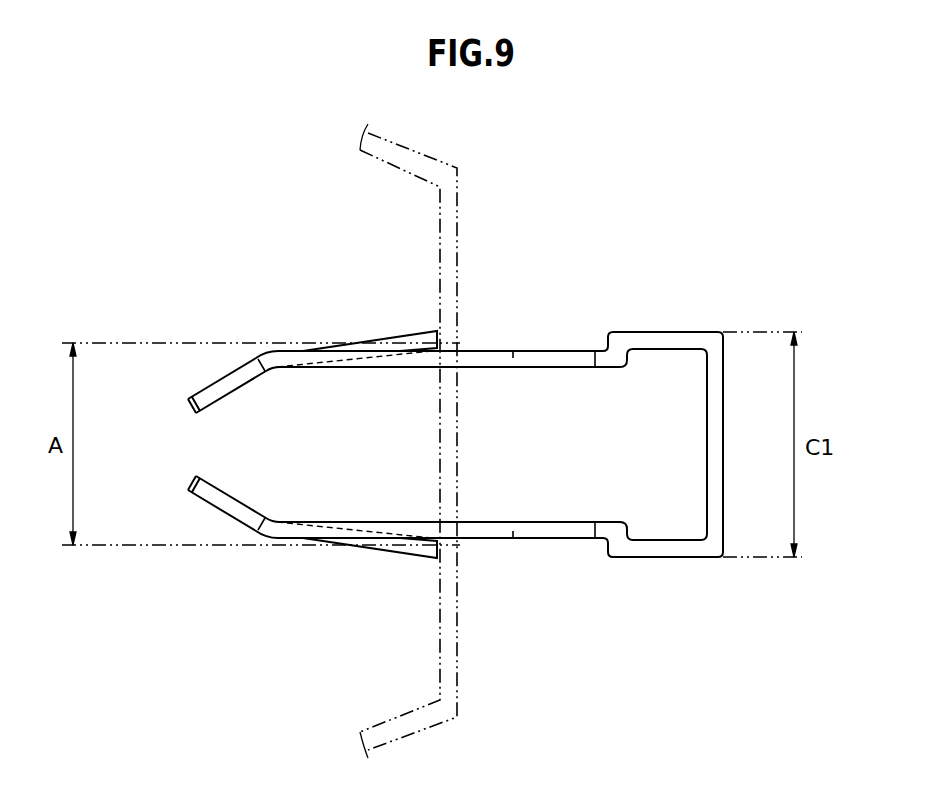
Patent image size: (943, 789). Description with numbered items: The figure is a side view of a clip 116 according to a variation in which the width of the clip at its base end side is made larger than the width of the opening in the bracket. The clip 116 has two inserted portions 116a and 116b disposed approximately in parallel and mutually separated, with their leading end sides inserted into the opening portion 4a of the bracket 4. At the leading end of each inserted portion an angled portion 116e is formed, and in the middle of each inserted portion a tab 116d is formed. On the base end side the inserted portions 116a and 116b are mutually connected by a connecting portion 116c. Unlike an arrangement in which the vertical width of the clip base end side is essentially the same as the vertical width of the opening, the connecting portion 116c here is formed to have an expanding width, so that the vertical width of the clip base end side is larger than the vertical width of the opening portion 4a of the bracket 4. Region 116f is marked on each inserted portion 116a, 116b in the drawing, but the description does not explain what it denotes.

The bracket 4 is at (453, 658).
The opening portion 4a is at (446, 350).
The clip 116 is at (411, 416).
The inserted portion 116a is at (293, 357).
The inserted portion 116b is at (293, 541).
The connecting portion 116c is at (716, 441).
The tab 116d is at (418, 340).
The angled portion 116e is at (193, 477).
The flat portion 116f is at (527, 357).